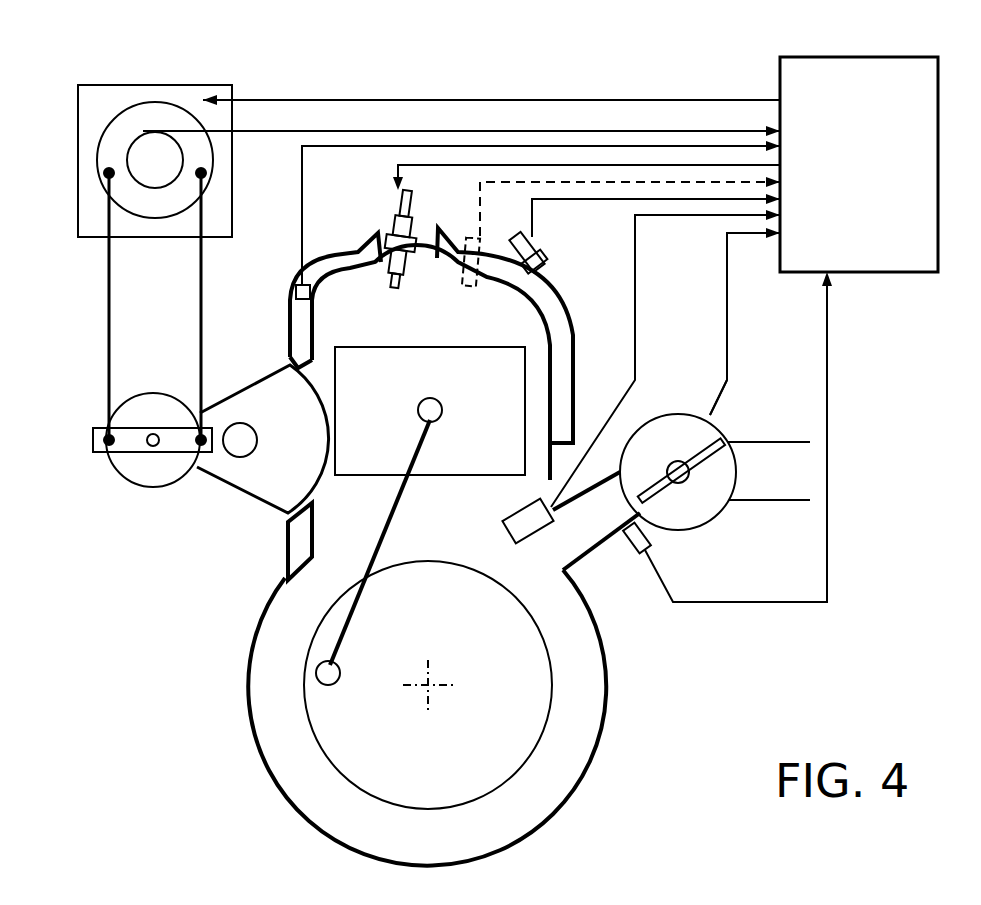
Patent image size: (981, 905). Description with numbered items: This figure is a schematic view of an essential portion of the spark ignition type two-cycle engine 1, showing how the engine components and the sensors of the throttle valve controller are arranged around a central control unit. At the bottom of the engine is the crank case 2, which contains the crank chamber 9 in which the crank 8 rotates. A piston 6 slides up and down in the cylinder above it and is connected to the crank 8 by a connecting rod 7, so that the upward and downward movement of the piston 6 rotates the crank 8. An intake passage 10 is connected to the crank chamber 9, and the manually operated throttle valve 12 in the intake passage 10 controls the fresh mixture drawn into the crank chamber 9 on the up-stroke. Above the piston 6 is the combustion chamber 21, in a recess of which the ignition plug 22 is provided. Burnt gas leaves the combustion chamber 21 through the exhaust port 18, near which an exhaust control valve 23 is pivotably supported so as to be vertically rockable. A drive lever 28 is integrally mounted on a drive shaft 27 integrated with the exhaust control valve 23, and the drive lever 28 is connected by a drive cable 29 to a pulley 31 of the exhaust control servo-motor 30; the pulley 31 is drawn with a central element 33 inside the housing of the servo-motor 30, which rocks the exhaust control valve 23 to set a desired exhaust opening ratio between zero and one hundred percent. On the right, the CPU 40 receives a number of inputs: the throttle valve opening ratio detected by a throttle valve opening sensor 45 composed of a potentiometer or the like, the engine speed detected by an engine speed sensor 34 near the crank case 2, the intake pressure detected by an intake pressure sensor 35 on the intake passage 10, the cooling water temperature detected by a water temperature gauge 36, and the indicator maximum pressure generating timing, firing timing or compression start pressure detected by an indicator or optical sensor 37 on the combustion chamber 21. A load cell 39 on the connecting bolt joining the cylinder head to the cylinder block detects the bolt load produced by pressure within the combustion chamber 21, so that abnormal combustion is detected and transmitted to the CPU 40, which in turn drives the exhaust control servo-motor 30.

The spark ignition type two-cycle engine 1 is at (534, 92).
The crank case 2 is at (548, 822).
The piston 6 is at (465, 460).
The connecting rod 7 is at (380, 527).
The crank 8 is at (334, 685).
The crank chamber 9 is at (585, 717).
The intake passage 10 is at (612, 536).
The throttle valve 12 is at (718, 527).
The exhaust port 18 is at (314, 378).
The combustion chamber 21 is at (462, 326).
The ignition plug 22 is at (390, 208).
The exhaust control valve 23 is at (276, 478).
The drive shaft 27 is at (158, 452).
The drive lever 28 is at (133, 478).
The drive cable 29 is at (200, 310).
The exhaust control servo-motor 30 is at (192, 85).
The pulley 31 is at (97, 148).
The output shaft 33 is at (143, 131).
The engine speed sensor 34 is at (533, 538).
The intake pressure sensor 35 is at (632, 548).
The water temperature gauge 36 is at (540, 255).
The indicator or optical sensor 37 is at (470, 240).
The load cell 39 is at (298, 323).
The CPU 40 is at (900, 57).
The throttle valve opening sensor 45 is at (708, 412).